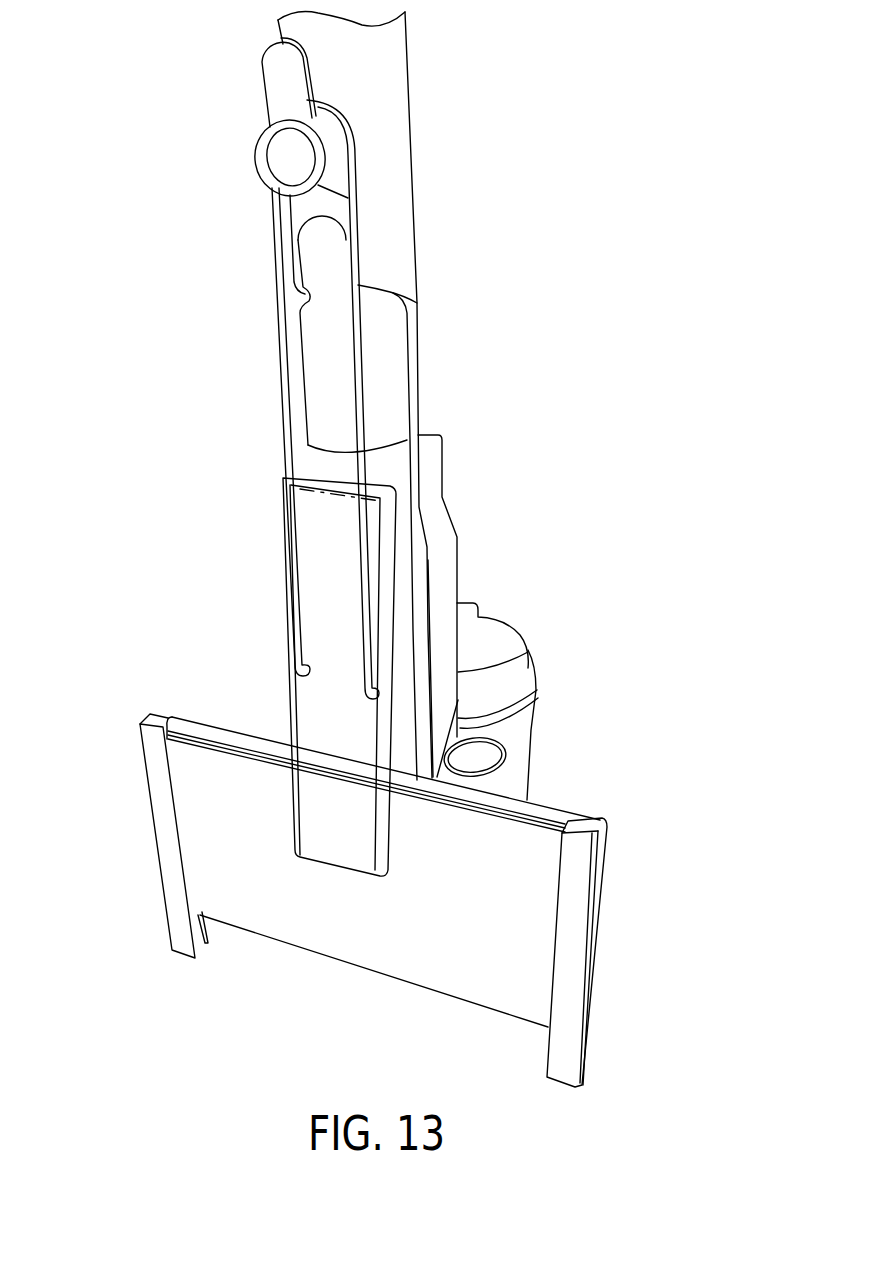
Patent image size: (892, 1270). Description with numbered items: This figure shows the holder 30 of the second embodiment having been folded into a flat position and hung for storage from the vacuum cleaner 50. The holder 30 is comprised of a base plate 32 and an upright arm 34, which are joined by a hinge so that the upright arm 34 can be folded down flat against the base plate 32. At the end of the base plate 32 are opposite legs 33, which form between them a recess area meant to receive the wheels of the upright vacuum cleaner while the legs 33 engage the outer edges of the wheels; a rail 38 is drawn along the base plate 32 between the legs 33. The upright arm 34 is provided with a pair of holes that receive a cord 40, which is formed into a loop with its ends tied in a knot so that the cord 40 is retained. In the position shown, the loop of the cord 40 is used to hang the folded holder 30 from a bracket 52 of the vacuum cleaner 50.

The holder 30 is at (387, 900).
The base plate 32 is at (481, 914).
The legs 33 is at (157, 800).
The upright arm 34 is at (350, 786).
The rail 38 is at (557, 813).
The cord 40 is at (277, 282).
The vacuum cleaner 50 is at (466, 460).
The bracket 52 is at (328, 142).